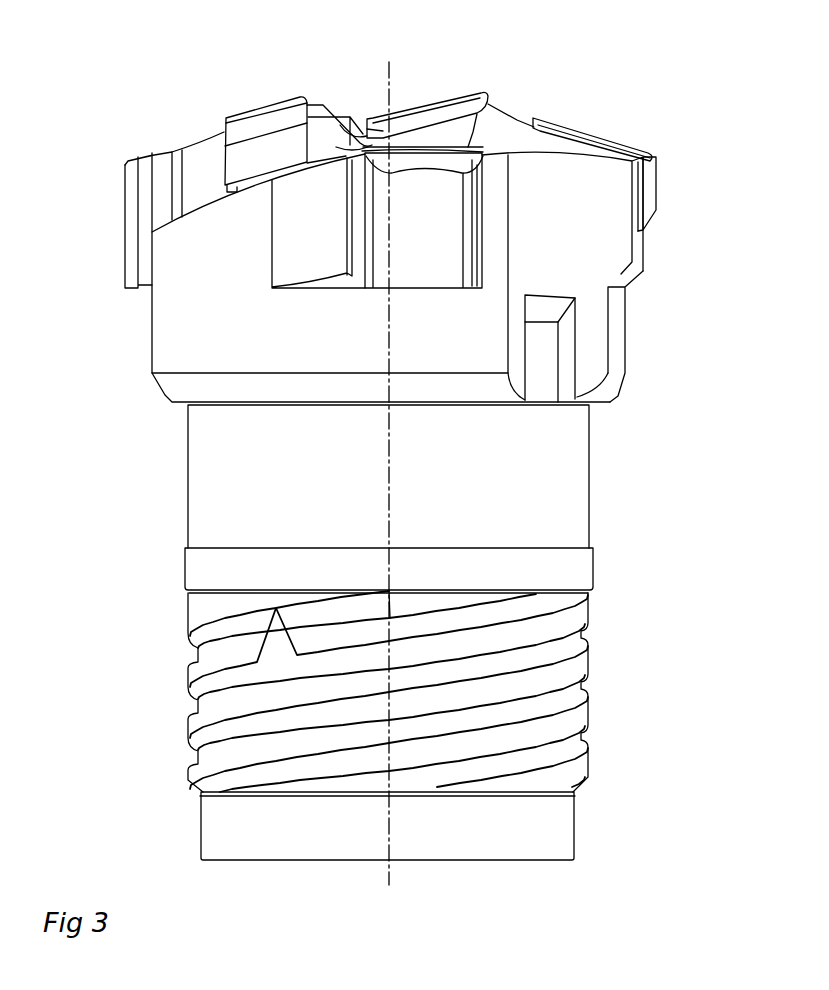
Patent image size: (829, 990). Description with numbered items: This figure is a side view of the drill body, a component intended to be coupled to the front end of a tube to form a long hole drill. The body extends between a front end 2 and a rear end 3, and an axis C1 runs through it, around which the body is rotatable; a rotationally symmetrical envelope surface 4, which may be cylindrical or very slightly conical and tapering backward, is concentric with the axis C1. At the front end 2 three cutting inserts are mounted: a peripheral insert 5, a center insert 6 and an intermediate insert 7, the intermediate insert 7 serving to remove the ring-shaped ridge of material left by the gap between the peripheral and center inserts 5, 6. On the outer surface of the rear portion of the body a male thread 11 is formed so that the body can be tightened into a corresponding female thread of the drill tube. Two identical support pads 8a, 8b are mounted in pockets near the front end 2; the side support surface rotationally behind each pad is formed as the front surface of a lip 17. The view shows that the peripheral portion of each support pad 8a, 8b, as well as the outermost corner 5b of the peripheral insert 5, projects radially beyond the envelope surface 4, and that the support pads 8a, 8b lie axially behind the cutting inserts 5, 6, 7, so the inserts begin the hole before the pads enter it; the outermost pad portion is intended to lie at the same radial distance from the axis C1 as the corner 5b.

The front end 2 is at (180, 128).
The rear end 3 is at (488, 870).
The envelope surface 4 is at (272, 347).
The peripheral insert 5 is at (612, 118).
The outermost corner 5b is at (657, 156).
The center insert 6 is at (433, 85).
The intermediate insert 7 is at (262, 88).
The support pad 8a is at (458, 292).
The support pad 8b is at (110, 255).
The male thread 11 is at (580, 690).
The lip 17 is at (325, 265).
The axis C1 is at (383, 83).